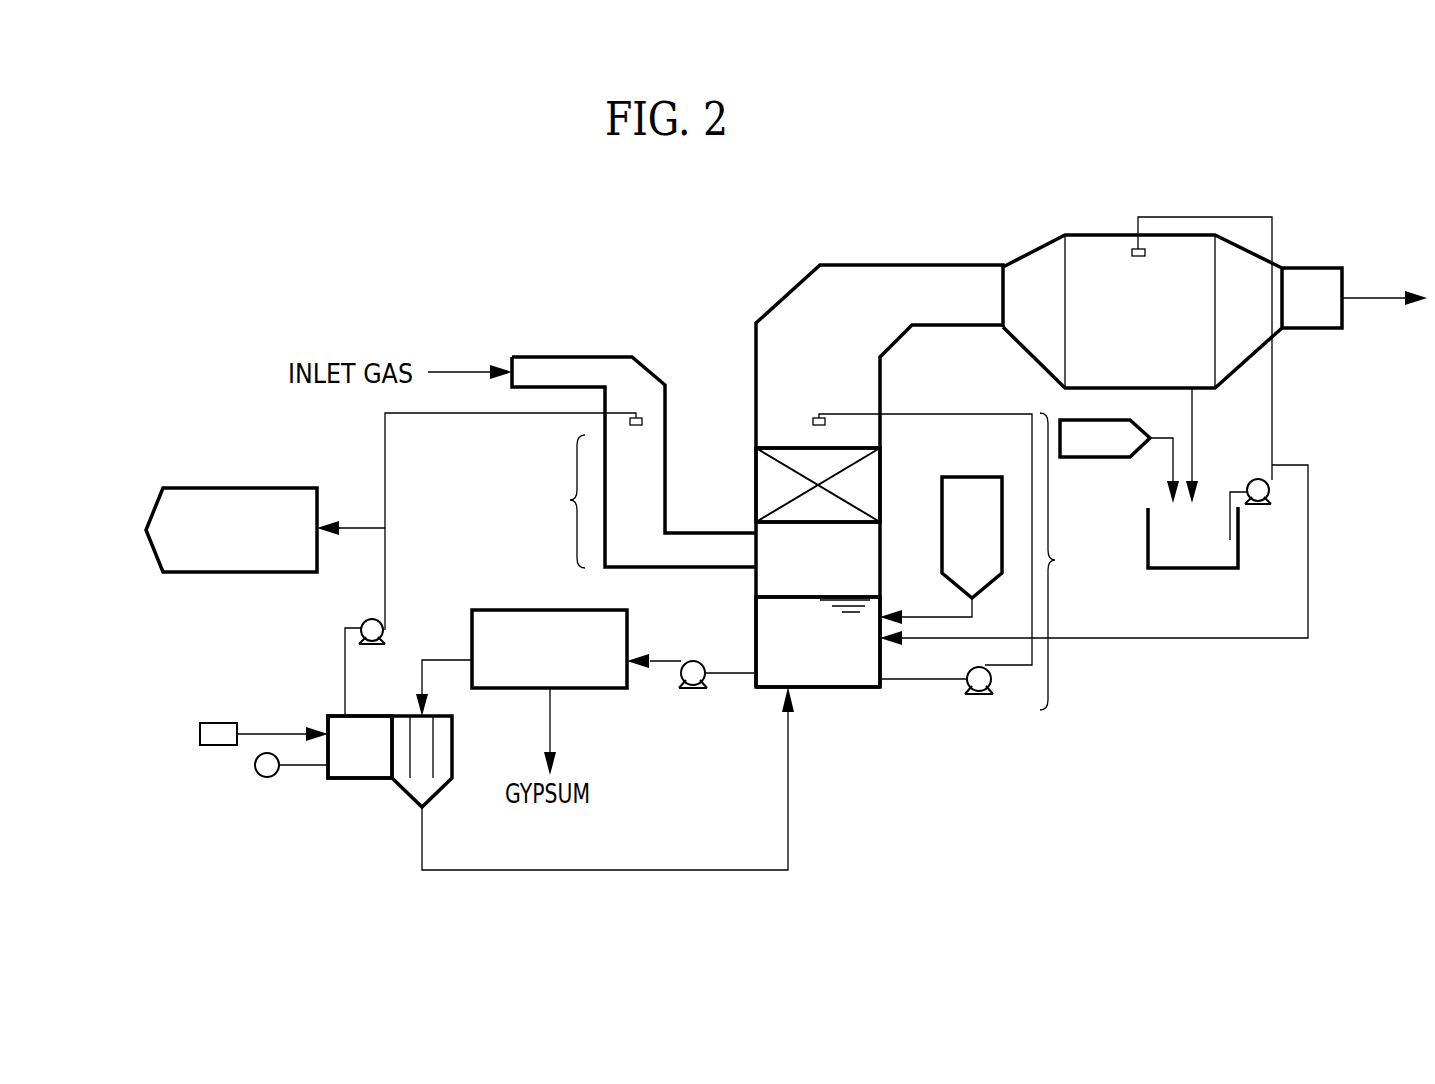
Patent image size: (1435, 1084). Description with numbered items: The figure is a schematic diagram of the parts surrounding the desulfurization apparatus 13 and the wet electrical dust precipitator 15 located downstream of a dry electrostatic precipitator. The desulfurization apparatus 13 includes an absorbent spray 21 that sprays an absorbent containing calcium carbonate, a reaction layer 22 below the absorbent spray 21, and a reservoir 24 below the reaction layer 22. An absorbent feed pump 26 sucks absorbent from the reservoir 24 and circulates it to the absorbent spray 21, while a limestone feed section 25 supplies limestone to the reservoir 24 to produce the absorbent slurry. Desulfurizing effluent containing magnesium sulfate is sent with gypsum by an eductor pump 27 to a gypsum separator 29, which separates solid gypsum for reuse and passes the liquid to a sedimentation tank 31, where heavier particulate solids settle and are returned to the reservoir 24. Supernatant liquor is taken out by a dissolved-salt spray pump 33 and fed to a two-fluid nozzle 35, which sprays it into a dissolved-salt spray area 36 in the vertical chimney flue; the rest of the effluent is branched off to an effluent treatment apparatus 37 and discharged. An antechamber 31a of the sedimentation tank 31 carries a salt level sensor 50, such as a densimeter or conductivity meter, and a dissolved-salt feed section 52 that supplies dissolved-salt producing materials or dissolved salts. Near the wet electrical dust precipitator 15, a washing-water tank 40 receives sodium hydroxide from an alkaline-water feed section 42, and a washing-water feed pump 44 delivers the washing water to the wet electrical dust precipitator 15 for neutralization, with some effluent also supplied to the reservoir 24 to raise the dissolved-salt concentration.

The desulfurization apparatus 13 is at (924, 487).
The wet electrical dust precipitator 15 is at (1176, 200).
The absorbent spray 21 is at (817, 415).
The reaction layer 22 is at (756, 470).
The reservoir 24 is at (756, 637).
The limestone feed section 25 is at (960, 477).
The absorbent feed pump 26 is at (975, 692).
The eductor pump 27 is at (695, 690).
The gypsum separator 29 is at (505, 610).
The sedimentation tank 31 is at (452, 740).
The antechamber 31a is at (336, 712).
The dissolved-salt spray pump 33 is at (366, 621).
The two-fluid nozzle 35 is at (637, 415).
The dissolved-salt spray area 36 is at (634, 462).
The effluent treatment apparatus 37 is at (258, 488).
The washing-water tank 40 is at (1240, 545).
The alkaline-water feed section 42 is at (1100, 460).
The washing-water feed pump 44 is at (1251, 480).
The salt level sensor 50 is at (265, 780).
The dissolved-salt feed section 52 is at (215, 748).